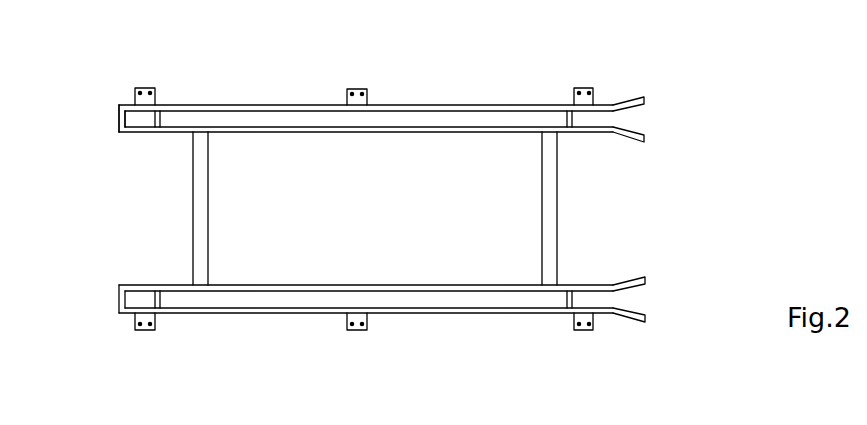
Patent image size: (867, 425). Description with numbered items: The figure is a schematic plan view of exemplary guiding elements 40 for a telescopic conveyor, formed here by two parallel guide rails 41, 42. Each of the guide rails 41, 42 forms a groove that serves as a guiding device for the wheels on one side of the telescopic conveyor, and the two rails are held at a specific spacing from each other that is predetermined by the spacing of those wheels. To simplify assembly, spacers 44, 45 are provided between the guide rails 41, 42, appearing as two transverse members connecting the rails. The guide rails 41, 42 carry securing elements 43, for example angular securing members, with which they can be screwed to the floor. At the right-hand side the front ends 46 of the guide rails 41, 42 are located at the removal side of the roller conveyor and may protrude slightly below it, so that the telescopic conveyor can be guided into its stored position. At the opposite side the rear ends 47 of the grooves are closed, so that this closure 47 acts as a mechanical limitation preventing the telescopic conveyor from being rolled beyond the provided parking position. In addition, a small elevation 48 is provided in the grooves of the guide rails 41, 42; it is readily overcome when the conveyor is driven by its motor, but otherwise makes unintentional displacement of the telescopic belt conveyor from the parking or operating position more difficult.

The guiding elements 40 is at (430, 86).
The guide rail 41 is at (259, 313).
The guide rail 42 is at (267, 105).
The securing elements 43 is at (354, 89).
The spacer 44 is at (198, 192).
The spacer 45 is at (549, 192).
The front end 46 is at (655, 116).
The rear end 47 is at (122, 117).
The elevation 48 is at (163, 119).